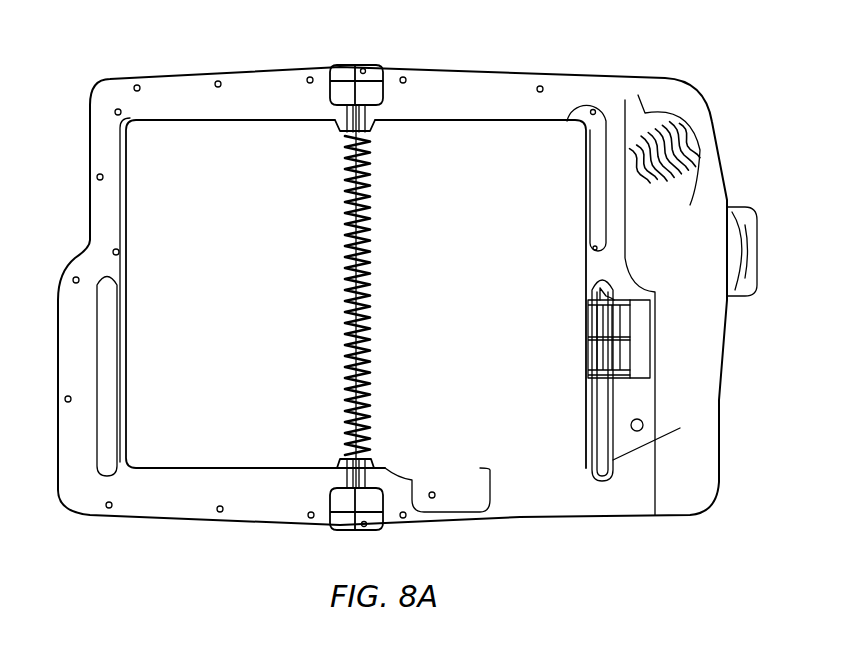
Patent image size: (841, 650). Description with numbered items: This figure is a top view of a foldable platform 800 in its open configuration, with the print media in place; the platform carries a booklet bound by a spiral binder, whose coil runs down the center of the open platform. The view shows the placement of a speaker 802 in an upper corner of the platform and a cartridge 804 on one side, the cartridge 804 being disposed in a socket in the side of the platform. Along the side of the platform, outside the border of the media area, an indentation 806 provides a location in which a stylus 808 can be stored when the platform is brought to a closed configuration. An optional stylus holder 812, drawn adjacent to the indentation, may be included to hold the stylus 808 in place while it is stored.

The foldable platform 800 is at (152, 62).
The speaker 802 is at (685, 122).
The cartridge 804 is at (759, 214).
The indentation 806 is at (680, 428).
The stylus 808 is at (600, 402).
The stylus holder 812 is at (598, 298).